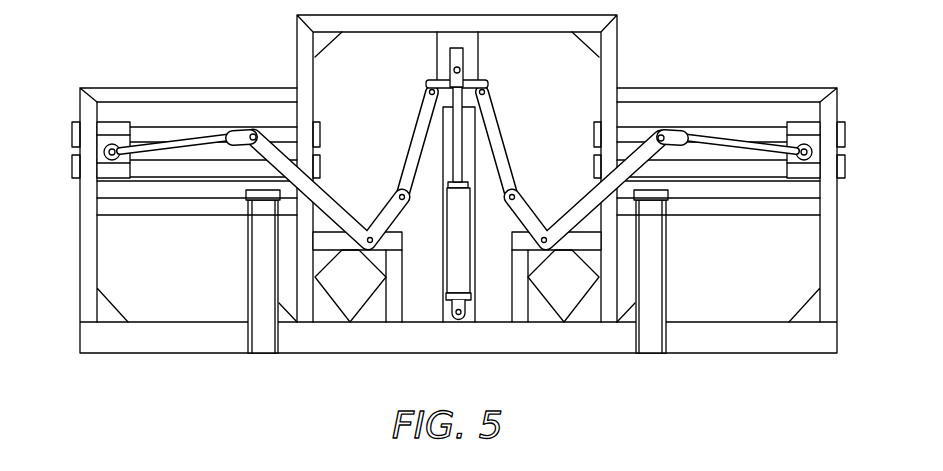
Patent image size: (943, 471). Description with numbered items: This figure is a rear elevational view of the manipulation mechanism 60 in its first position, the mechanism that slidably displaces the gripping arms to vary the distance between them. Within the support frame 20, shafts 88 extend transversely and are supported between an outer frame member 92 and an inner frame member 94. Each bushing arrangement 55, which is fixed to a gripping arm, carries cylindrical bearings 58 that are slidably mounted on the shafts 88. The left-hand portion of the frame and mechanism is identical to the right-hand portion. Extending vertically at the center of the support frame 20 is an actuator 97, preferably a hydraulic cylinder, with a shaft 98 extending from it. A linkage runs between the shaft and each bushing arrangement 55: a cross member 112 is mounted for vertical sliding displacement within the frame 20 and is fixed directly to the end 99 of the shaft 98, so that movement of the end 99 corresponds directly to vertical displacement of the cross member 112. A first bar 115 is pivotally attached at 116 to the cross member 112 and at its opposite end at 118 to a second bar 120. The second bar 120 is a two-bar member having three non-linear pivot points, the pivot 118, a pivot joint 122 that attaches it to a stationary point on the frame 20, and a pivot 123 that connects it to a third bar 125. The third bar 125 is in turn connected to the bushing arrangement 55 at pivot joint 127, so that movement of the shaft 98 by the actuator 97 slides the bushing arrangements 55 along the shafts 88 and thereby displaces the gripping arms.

The support frame 20 is at (757, 362).
The bushing arrangement 55 is at (106, 112).
The cylindrical bearings 58 is at (117, 121).
The manipulation mechanism 60 is at (659, 50).
The shafts 88 is at (162, 127).
The outer frame member 92 is at (80, 265).
The inner frame member 94 is at (316, 90).
The actuator 97 is at (446, 266).
The shaft 98 is at (463, 128).
The end of shaft 99 is at (455, 67).
The cross member 112 is at (484, 80).
The first bar 115 is at (408, 140).
The pivot 116 is at (427, 96).
The pivot 118 is at (400, 189).
The second bar 120 is at (322, 226).
The pivot joint 122 is at (367, 249).
The pivot 123 is at (257, 130).
The third bar 125 is at (198, 135).
The pivot joint 127 is at (105, 161).